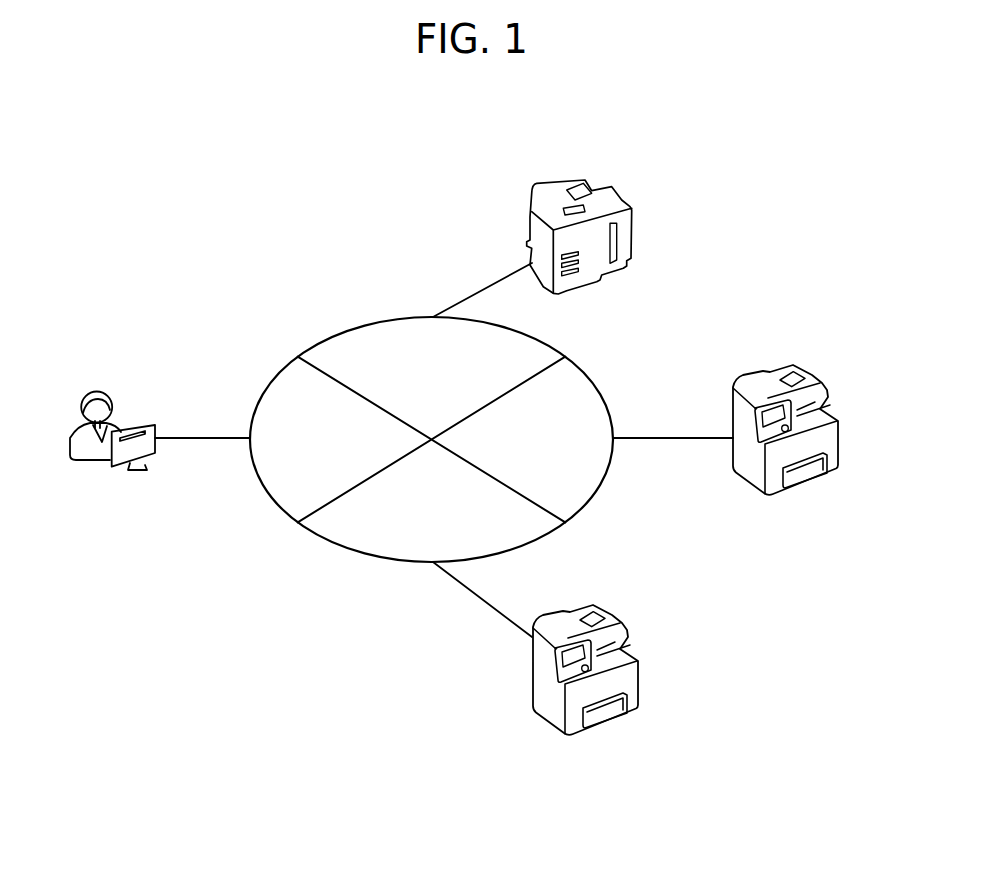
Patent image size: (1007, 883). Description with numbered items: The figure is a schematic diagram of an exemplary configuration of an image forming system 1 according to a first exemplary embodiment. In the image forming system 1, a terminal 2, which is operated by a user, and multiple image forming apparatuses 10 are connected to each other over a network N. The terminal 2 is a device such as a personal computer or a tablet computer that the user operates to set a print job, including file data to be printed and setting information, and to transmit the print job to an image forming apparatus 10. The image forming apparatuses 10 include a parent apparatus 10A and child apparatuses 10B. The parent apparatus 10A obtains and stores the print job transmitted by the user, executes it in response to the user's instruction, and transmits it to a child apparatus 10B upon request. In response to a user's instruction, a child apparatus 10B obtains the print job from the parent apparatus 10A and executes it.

The image forming system 1 is at (310, 252).
The terminal 2 is at (145, 424).
The image forming apparatuses 10 is at (715, 441).
The parent apparatus 10A is at (615, 188).
The child apparatuses 10B is at (808, 370).
The network N is at (558, 351).